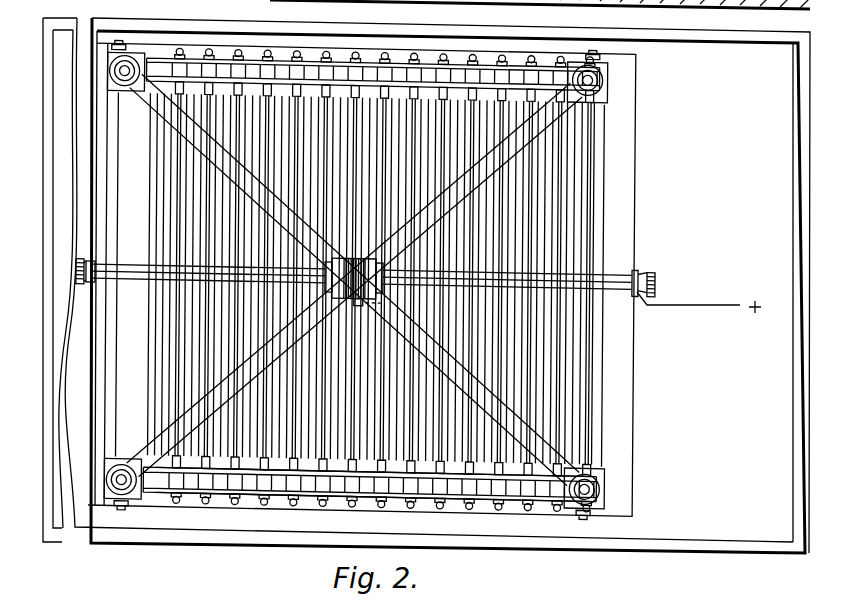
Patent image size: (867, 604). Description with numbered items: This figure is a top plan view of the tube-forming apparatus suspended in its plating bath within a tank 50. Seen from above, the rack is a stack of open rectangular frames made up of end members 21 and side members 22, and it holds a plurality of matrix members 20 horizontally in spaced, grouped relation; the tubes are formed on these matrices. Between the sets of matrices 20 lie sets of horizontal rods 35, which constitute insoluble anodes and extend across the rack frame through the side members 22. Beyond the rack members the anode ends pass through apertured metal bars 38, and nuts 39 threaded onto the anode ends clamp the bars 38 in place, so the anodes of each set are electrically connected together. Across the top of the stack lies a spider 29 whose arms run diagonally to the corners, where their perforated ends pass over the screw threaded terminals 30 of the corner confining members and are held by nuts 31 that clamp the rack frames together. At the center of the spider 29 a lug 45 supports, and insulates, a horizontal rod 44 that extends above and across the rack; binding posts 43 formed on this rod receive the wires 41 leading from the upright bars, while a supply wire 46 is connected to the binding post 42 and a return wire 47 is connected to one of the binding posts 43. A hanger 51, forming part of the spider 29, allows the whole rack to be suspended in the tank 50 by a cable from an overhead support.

The matrix member 20 is at (526, 378).
The end member 21 is at (604, 171).
The side member 22 is at (472, 502).
The spider 29 is at (378, 260).
The screw threaded terminal 30 is at (604, 80).
The nut 31 is at (601, 490).
The rod 35 is at (694, 122).
The metal bar 38 is at (341, 498).
The nut 39 is at (277, 503).
The wire 41 is at (637, 200).
The binding post 42 is at (352, 300).
The binding post 43 is at (81, 284).
The horizontal rod 44 is at (578, 272).
The lug 45 is at (340, 258).
The supply wire 46 is at (376, 300).
The return wire 47 is at (708, 306).
The tank 50 is at (727, 43).
The hanger 51 is at (349, 291).